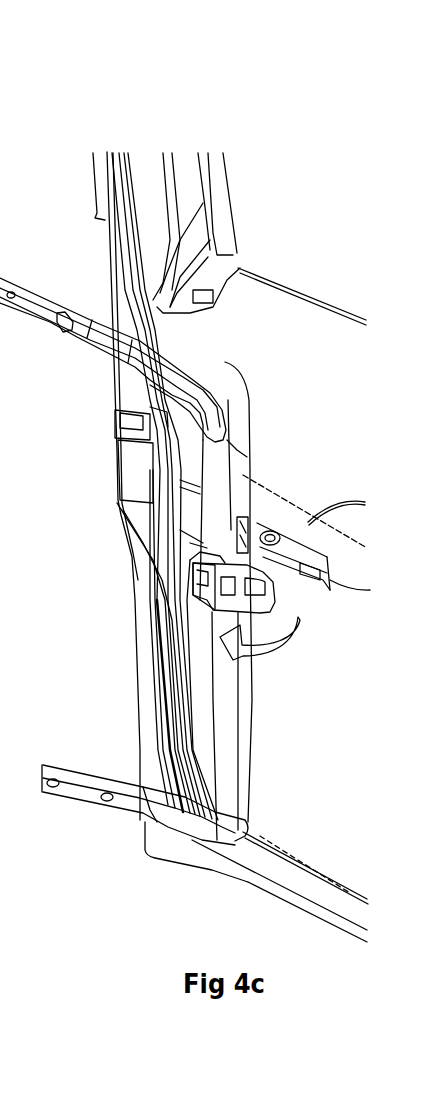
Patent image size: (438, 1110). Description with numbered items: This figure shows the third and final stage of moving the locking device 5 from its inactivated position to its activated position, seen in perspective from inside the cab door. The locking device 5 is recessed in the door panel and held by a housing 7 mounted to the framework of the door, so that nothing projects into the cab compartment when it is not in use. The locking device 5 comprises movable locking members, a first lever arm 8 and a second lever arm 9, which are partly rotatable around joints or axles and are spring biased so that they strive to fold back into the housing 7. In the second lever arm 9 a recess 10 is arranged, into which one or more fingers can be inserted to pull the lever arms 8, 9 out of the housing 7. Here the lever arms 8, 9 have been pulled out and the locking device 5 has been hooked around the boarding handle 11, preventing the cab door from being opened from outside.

The locking device 5 is at (239, 556).
The housing 7 is at (283, 542).
The first lever arm 8 is at (253, 528).
The second lever arm 9 is at (205, 590).
The recess 10 is at (227, 578).
The boarding handle 11 is at (227, 752).